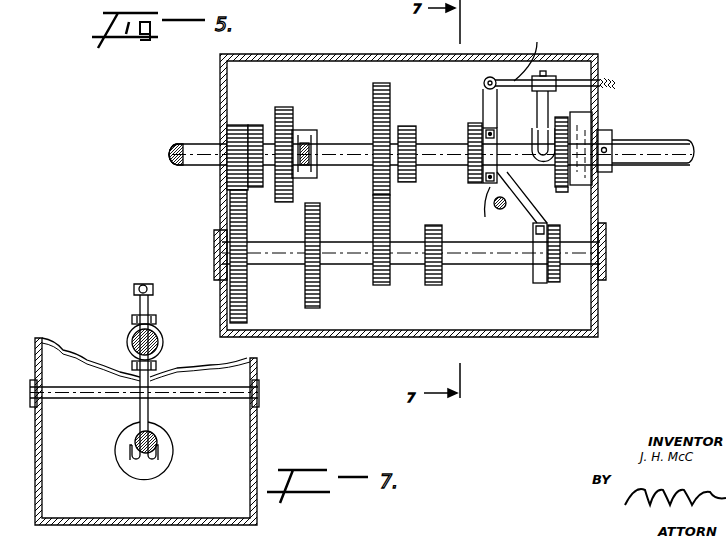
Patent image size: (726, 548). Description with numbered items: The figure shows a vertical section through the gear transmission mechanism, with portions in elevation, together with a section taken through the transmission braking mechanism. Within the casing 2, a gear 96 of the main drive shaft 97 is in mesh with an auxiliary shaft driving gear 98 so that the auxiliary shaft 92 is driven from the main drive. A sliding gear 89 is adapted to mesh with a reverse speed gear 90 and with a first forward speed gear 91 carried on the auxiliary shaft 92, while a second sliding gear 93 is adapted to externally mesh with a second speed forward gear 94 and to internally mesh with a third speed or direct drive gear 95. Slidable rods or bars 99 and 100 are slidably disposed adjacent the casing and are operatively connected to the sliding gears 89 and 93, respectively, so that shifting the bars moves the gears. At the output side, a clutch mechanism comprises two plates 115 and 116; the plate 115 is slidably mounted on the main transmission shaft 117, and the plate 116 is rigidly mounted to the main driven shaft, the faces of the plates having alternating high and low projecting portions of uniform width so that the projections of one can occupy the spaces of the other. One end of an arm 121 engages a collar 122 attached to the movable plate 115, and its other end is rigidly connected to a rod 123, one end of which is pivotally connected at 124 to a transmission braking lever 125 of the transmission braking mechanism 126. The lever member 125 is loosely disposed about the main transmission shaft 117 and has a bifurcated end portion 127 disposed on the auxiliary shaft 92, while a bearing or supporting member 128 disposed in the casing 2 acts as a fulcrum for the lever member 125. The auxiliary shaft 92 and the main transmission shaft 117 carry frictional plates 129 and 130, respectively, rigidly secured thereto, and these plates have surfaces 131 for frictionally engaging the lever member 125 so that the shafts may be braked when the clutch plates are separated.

In FIG. 5, the casing 2 is at (563, 337).
In FIG. 7, the casing 2 is at (254, 460).
In FIG. 5, the sliding gear 89 is at (388, 97).
In FIG. 5, the reverse speed gear 90 is at (442, 232).
In FIG. 5, the first forward speed gear 91 is at (383, 285).
In FIG. 5, the auxiliary shaft 92 is at (470, 258).
In FIG. 7, the auxiliary shaft 92 is at (158, 441).
In FIG. 5, the sliding gear 93 is at (293, 110).
In FIG. 5, the second speed forward gear 94 is at (320, 215).
In FIG. 5, the third speed or direct drive gear 95 is at (258, 128).
In FIG. 5, the gear 96 is at (240, 132).
In FIG. 5, the main drive shaft 97 is at (190, 145).
In FIG. 5, the auxiliary shaft driving gear 98 is at (247, 235).
In FIG. 5, the slidable rod or bar 99 is at (410, 126).
In FIG. 5, the slidable rod or bar 100 is at (305, 150).
In FIG. 5, the plate 115 is at (562, 118).
In FIG. 5, the plate 116 is at (580, 134).
In FIG. 5, the main transmission shaft 117 is at (517, 166).
In FIG. 7, the main transmission shaft 117 is at (158, 345).
In FIG. 5, the arm 121 is at (536, 104).
In FIG. 5, the collar 122 is at (548, 190).
In FIG. 5, the rod 123 is at (529, 53).
In FIG. 5, the pivotal connection 124 is at (483, 83).
In FIG. 5, the transmission braking lever 125 is at (503, 212).
In FIG. 7, the transmission braking lever 125 is at (140, 402).
In FIG. 7, the transmission braking mechanism 126 is at (124, 340).
In FIG. 7, the bifurcated end portion 127 is at (130, 443).
In FIG. 7, the bearing or supporting member 128 is at (234, 398).
In FIG. 5, the frictional plate 129 is at (556, 283).
In FIG. 7, the frictional plate 129 is at (144, 282).
In FIG. 5, the frictional plate 130 is at (469, 178).
In FIG. 5, the surfaces 131 is at (484, 126).